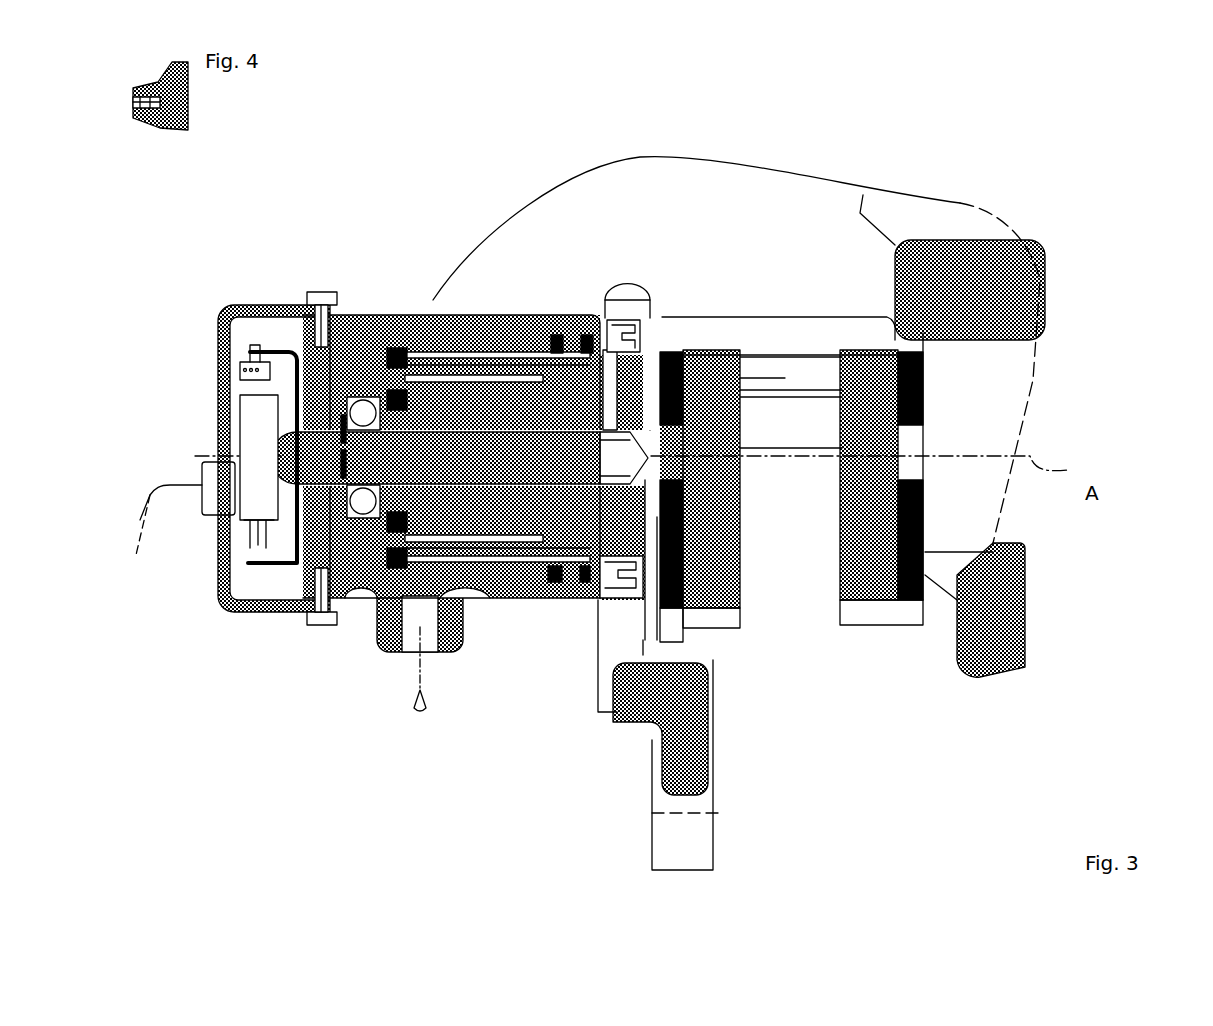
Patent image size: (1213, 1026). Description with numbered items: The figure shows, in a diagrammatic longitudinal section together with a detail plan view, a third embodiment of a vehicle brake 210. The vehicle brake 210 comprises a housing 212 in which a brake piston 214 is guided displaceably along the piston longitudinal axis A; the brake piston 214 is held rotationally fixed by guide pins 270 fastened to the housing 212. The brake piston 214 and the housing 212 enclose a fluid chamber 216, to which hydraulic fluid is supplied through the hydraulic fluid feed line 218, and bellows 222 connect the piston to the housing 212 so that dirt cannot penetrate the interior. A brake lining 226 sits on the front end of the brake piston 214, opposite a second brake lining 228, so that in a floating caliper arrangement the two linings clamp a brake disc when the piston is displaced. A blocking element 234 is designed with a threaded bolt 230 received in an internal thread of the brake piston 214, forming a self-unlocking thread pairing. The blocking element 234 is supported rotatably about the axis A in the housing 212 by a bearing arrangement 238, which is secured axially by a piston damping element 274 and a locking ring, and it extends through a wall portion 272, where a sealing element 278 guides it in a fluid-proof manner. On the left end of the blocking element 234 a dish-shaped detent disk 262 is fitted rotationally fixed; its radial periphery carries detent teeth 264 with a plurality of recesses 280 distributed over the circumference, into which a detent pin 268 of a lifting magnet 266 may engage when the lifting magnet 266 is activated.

In FIG. 3, the vehicle brake 210 is at (1080, 205).
In FIG. 3, the housing 212 is at (525, 318).
In FIG. 3, the brake piston 214 is at (607, 302).
In FIG. 3, the fluid chamber 216 is at (337, 612).
In FIG. 3, the hydraulic fluid feed line 218 is at (420, 723).
In FIG. 3, the bellows 222 is at (655, 320).
In FIG. 3, the brake lining 226 is at (723, 603).
In FIG. 3, the second brake lining 228 is at (867, 612).
In FIG. 3, the threaded bolt 230 is at (598, 612).
In FIG. 3, the blocking element 234 is at (492, 470).
In FIG. 3, the bearing arrangement 238 is at (378, 345).
In FIG. 3, the detent disk 262 is at (253, 612).
In FIG. 4, the detent teeth 264 is at (178, 132).
In FIG. 3, the detent teeth 264 is at (278, 345).
In FIG. 3, the lifting magnet 266 is at (248, 507).
In FIG. 4, the detent pin 268 is at (135, 100).
In FIG. 3, the detent pin 268 is at (260, 340).
In FIG. 3, the guide pins 270 is at (425, 590).
In FIG. 3, the wall portion 272 is at (372, 400).
In FIG. 3, the piston damping element 274 is at (348, 345).
In FIG. 3, the sealing element 278 is at (295, 375).
In FIG. 4, the recesses 280 is at (135, 108).